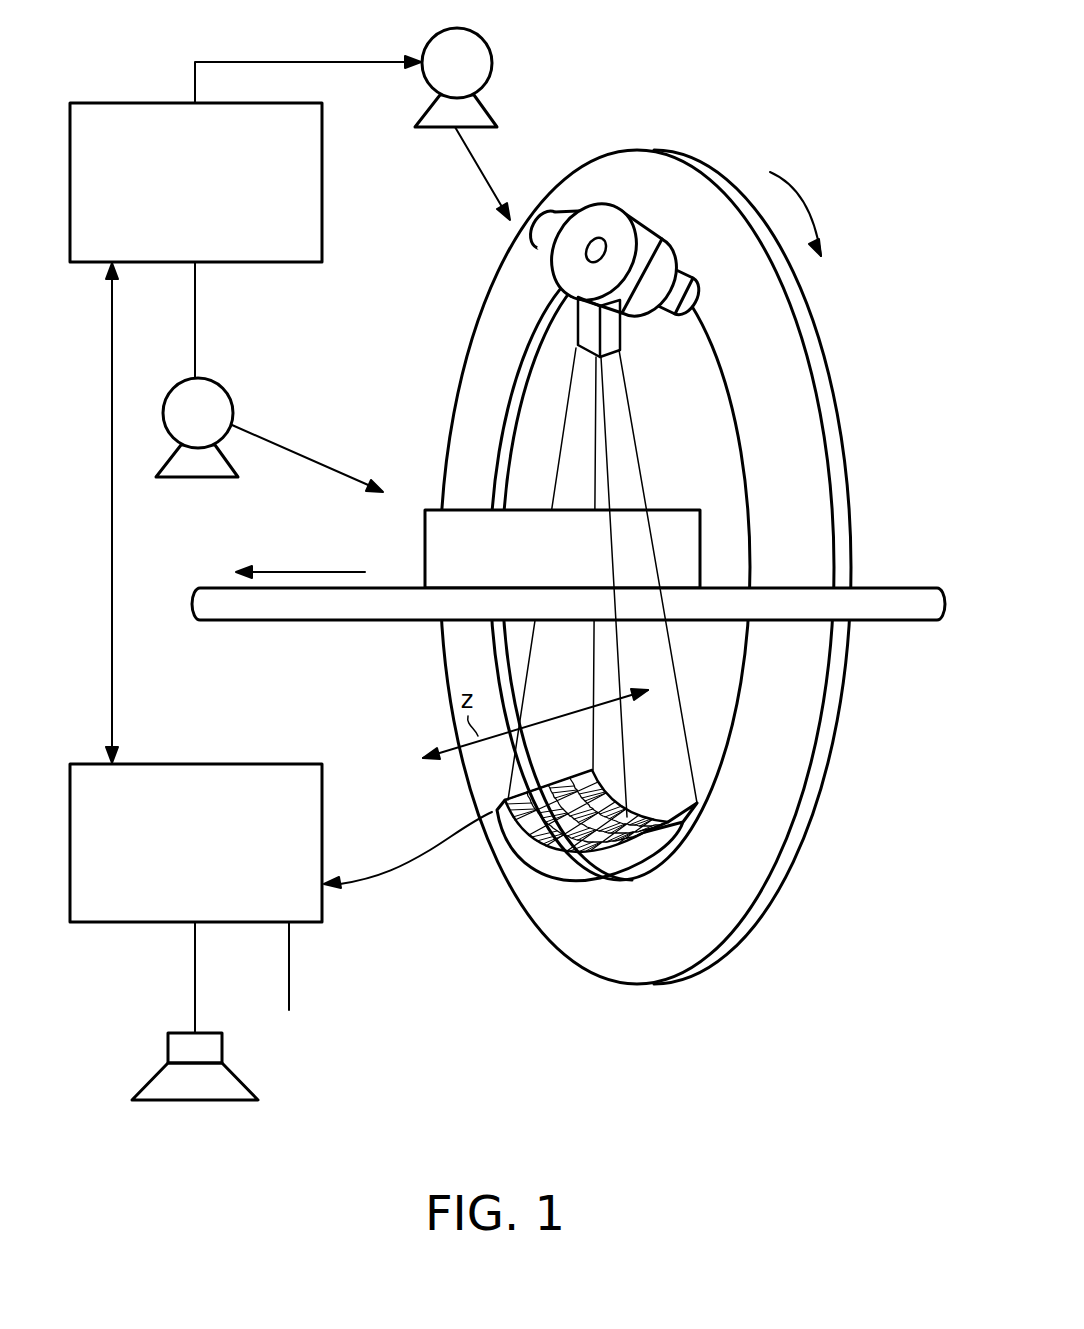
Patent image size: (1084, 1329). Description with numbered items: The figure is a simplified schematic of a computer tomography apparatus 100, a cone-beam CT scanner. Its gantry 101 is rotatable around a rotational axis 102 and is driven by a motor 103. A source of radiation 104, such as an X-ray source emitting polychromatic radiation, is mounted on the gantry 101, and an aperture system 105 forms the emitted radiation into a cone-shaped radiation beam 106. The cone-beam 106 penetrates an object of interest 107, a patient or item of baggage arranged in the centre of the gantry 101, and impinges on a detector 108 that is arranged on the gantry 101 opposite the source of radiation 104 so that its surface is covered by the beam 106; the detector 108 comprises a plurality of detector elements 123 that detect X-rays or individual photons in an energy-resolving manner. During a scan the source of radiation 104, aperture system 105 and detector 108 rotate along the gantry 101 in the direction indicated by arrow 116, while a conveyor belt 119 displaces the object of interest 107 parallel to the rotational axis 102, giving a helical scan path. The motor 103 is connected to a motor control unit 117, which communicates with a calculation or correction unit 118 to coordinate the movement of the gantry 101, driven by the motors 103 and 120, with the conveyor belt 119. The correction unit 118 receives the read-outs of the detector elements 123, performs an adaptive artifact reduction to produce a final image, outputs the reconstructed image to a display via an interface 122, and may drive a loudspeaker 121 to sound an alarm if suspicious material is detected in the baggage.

The computer tomography apparatus 100 is at (780, 58).
The gantry 101 is at (808, 745).
The rotational axis 102 is at (290, 563).
The motor 103 is at (493, 56).
The source of radiation 104 is at (632, 222).
The aperture system 105 is at (583, 325).
The cone-shaped radiation beam 106 is at (637, 460).
The object of interest 107 is at (423, 548).
The detector 108 is at (548, 878).
The arrow 116 is at (807, 192).
The motor control unit 117 is at (122, 100).
The calculation or correction unit 118 is at (224, 762).
The conveyor belt 119 is at (910, 590).
The motor 120 is at (236, 398).
The loudspeaker 121 is at (190, 1103).
The interface 122 is at (291, 968).
The detector elements 123 is at (552, 778).